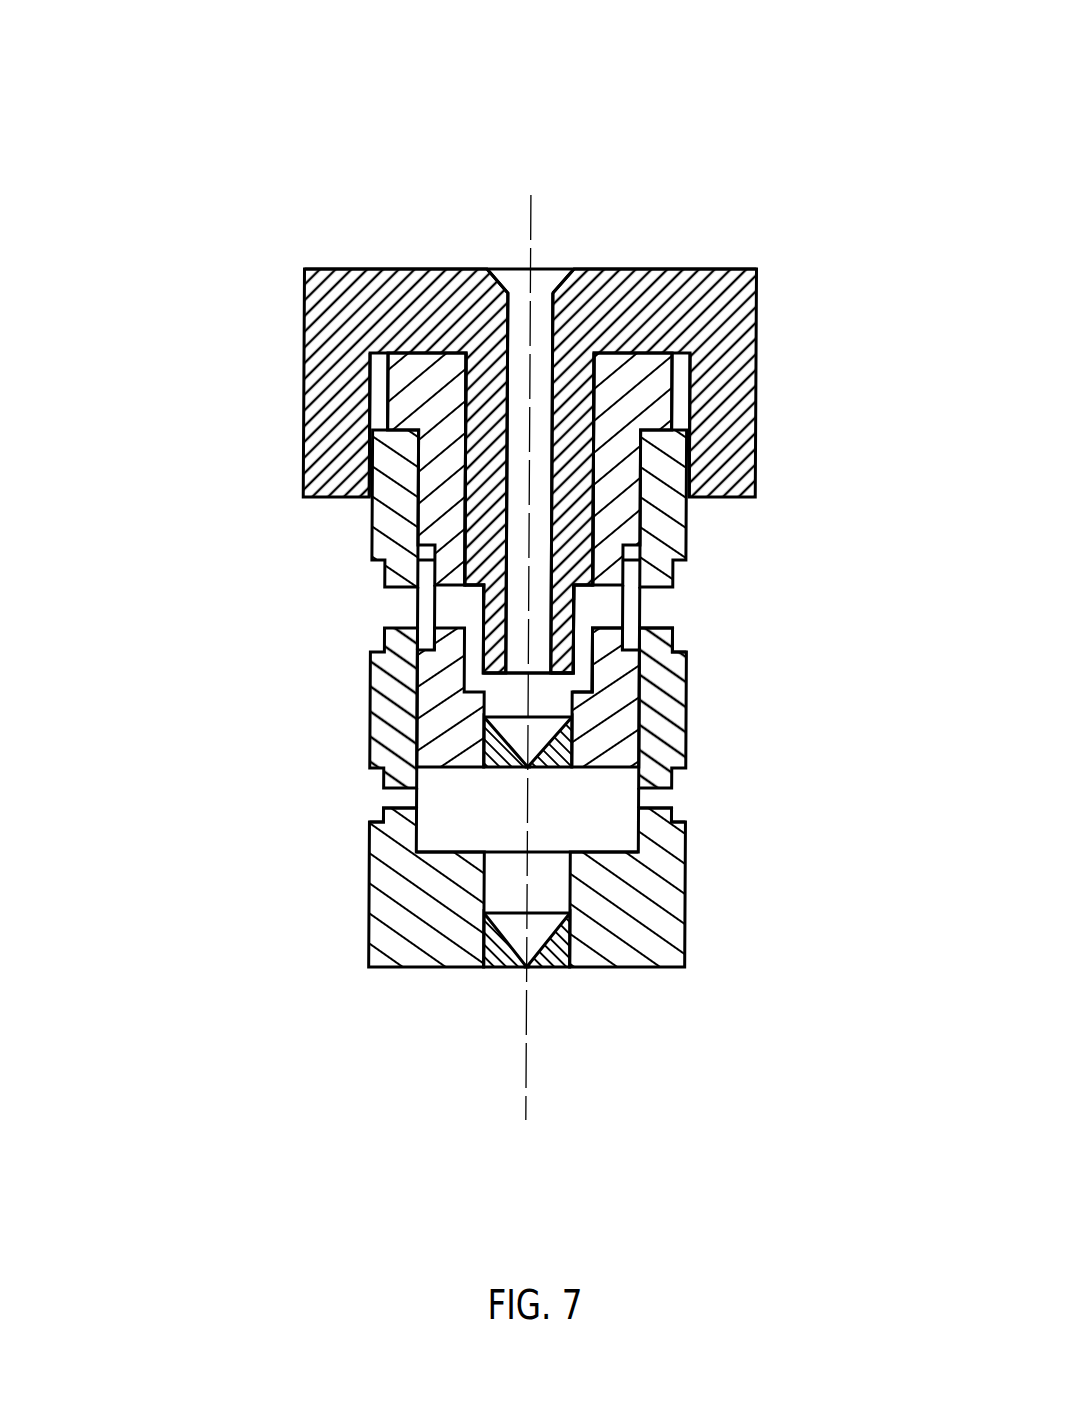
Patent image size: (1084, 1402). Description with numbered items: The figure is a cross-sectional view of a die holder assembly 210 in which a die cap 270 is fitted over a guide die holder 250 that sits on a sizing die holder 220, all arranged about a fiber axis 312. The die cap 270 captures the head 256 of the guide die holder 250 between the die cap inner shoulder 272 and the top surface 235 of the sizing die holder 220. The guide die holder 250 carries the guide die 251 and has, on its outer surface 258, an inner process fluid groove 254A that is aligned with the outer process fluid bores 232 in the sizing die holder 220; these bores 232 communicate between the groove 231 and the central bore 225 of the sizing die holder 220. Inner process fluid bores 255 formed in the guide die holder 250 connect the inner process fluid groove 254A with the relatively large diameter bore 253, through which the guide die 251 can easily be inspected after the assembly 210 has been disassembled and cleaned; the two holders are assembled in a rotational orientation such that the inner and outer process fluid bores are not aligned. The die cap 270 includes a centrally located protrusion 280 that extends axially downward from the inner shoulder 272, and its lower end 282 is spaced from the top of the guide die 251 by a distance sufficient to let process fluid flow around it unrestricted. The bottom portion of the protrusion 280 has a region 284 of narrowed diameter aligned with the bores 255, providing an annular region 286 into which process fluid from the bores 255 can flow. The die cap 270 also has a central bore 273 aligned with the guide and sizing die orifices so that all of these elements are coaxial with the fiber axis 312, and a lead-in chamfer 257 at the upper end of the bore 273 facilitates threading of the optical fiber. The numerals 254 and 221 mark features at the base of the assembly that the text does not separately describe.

The die holder assembly 210 is at (268, 195).
The fiber axis 312 is at (530, 217).
The central bore 273 is at (509, 343).
The lead-in chamfer 257 is at (563, 287).
The die cap 270 is at (750, 322).
The die cap inner shoulder 272 is at (380, 370).
The head 256 is at (672, 390).
The protrusion 280 is at (485, 440).
The top surface 235 is at (681, 415).
The outer surface 258 is at (400, 516).
The guide die holder 250 is at (610, 496).
The inner process fluid groove 254A is at (430, 578).
The inner process fluid bores 255 is at (603, 588).
The annular region 286 is at (480, 594).
The outer process fluid bores 232 is at (650, 630).
The groove 231 is at (690, 642).
The bore 253 is at (472, 645).
The guide die 251 is at (483, 750).
The region of narrowed diameter 284 is at (563, 647).
The lower end 282 is at (593, 655).
The outer nut 254 is at (447, 768).
The central bore 225 is at (420, 818).
The sizing die holder 220 is at (392, 933).
The outlet orifice 221 is at (500, 967).